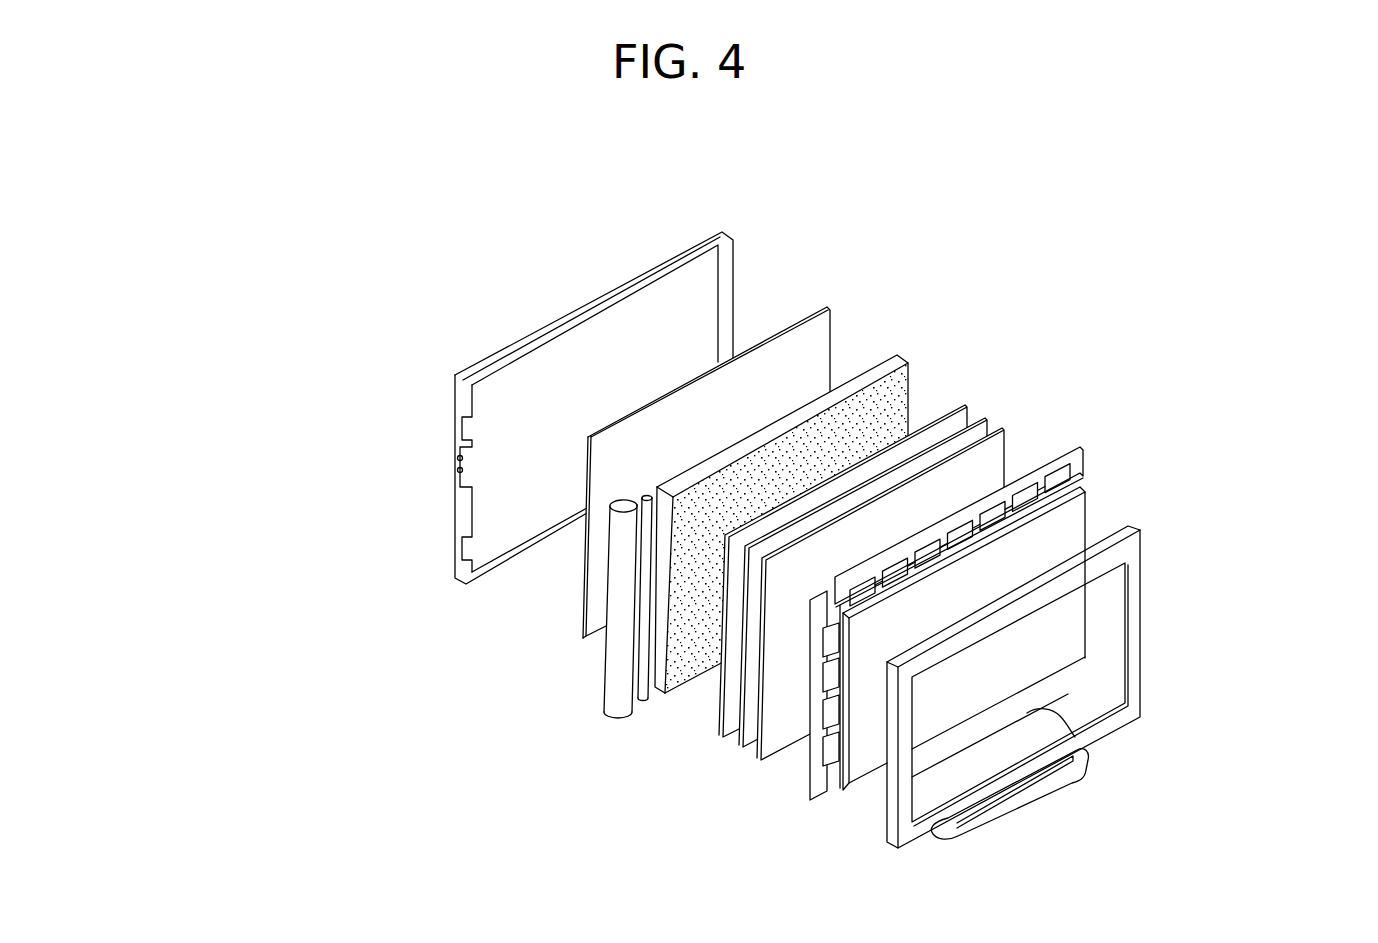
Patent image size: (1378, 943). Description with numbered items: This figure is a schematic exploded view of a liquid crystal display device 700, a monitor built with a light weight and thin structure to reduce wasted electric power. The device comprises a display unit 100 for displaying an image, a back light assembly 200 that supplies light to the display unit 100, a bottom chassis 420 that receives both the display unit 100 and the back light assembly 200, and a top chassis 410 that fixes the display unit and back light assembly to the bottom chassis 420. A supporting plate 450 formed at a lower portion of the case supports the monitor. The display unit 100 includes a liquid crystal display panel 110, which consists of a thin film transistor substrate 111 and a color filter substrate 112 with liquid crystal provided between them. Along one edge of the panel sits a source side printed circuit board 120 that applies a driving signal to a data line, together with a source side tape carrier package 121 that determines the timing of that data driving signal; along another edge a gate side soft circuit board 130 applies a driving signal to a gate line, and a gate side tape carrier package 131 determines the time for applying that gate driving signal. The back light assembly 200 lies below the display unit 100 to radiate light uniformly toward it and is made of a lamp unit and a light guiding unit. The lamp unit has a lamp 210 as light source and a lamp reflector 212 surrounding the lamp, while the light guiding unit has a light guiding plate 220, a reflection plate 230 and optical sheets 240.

The liquid crystal display device 700 is at (357, 315).
The back light assembly 200 is at (1050, 290).
The display unit 100 is at (1250, 434).
The bottom chassis 420 is at (733, 238).
The reflection plate 230 is at (830, 310).
The lamp reflector 212 is at (604, 684).
The lamp 210 is at (642, 700).
The light guiding plate 220 is at (907, 360).
The optical sheets 240 is at (972, 393).
The gate side soft circuit board 130 is at (721, 720).
The gate side tape carrier package 131 is at (830, 790).
The source side printed circuit board 120 is at (946, 654).
The source side tape carrier package 121 is at (1084, 479).
The liquid crystal display panel 110 is at (887, 691).
The thin film transistor substrate 111 is at (840, 790).
The color filter substrate 112 is at (857, 780).
The top chassis 410 is at (1132, 648).
The supporting plate 450 is at (1033, 802).